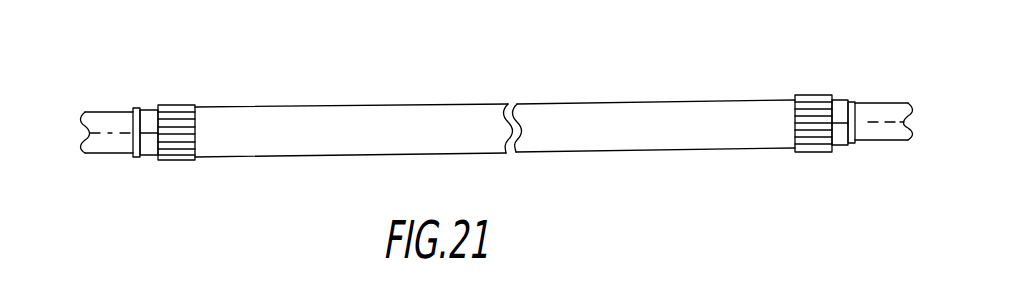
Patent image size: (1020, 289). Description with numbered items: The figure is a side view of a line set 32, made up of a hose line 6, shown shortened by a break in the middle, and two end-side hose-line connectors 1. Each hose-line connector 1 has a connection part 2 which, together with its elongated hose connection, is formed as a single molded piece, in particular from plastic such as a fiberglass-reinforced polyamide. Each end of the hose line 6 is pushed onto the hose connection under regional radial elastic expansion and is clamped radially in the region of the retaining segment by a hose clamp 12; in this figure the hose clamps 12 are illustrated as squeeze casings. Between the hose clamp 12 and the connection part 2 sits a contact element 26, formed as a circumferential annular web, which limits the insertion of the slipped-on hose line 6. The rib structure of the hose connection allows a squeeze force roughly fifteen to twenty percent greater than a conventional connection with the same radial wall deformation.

The hose-line connector 1 is at (110, 170).
The connection part 2 is at (132, 123).
The hose line 6 is at (264, 143).
The hose clamp 12 is at (175, 160).
The contact element 26 is at (135, 150).
The line set 32 is at (572, 90).